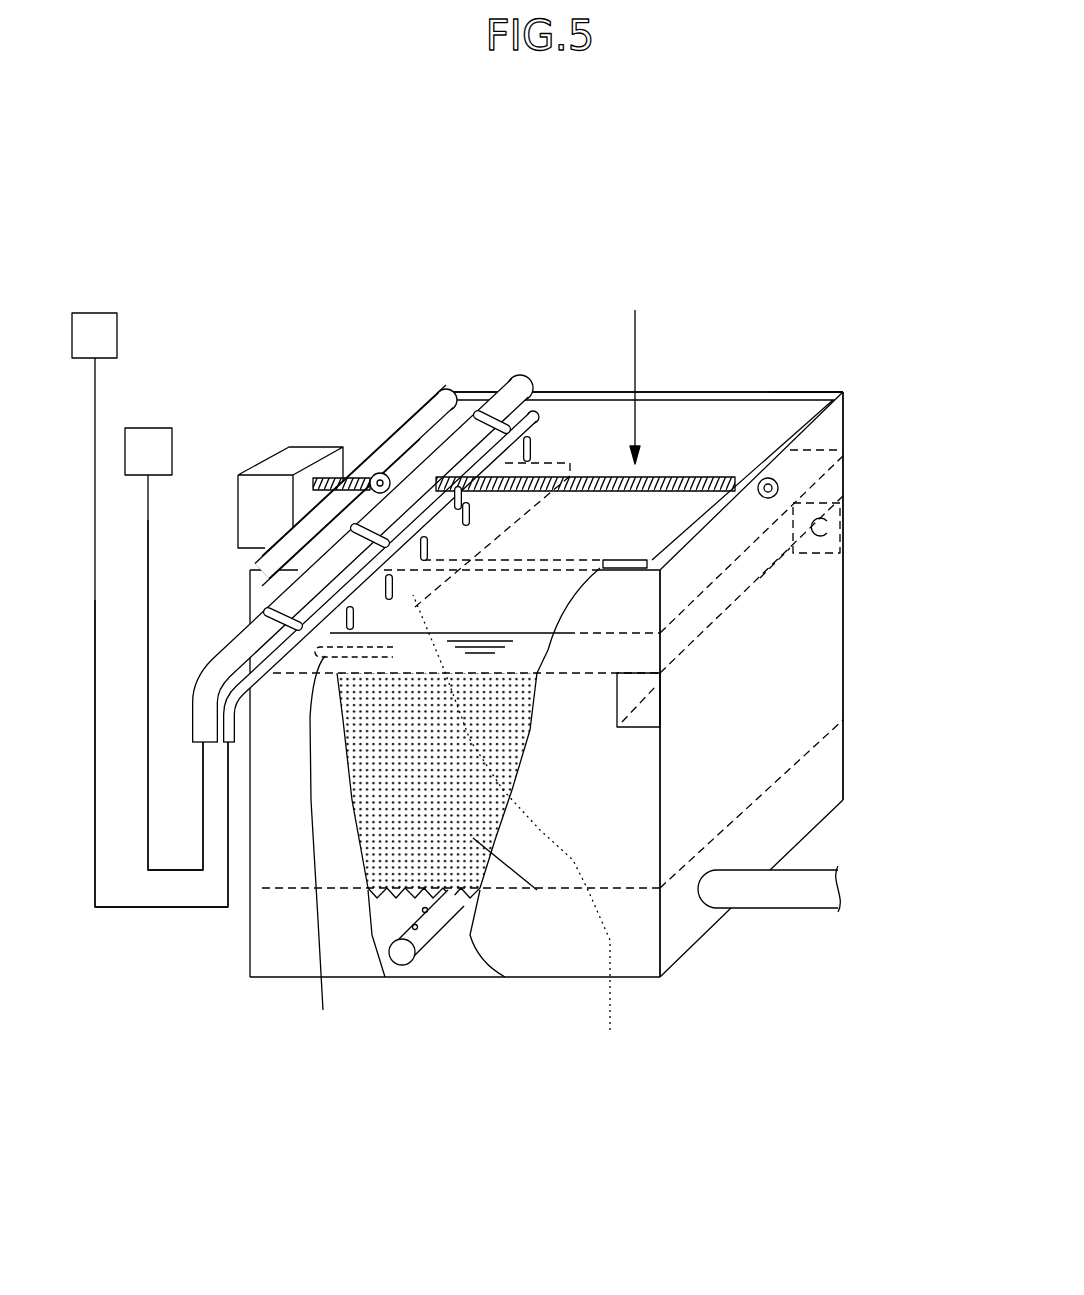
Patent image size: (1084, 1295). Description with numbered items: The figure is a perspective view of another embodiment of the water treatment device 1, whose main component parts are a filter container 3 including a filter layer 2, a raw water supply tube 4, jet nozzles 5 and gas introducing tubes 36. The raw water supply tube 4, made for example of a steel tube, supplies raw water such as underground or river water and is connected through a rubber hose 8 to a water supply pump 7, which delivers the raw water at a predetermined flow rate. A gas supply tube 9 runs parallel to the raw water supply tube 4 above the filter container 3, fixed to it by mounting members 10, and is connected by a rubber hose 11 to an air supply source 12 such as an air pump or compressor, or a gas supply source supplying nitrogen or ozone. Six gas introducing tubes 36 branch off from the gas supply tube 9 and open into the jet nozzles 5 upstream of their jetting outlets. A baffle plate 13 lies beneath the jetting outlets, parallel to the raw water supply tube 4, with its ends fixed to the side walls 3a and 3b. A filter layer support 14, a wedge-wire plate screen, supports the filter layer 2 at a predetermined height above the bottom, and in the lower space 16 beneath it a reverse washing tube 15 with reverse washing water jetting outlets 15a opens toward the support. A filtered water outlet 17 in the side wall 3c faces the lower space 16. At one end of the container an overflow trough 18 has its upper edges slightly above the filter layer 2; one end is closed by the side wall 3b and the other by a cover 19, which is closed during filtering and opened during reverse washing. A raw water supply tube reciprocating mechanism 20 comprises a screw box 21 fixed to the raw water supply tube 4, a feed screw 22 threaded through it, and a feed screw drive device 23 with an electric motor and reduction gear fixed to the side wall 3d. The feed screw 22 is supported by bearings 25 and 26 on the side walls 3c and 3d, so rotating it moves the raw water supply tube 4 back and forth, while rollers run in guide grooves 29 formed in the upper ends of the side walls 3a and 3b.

The water treatment device 1 is at (622, 232).
The filter layer 2 is at (537, 892).
The filter container 3 is at (817, 662).
The side wall 3a is at (690, 420).
The side wall 3b is at (647, 592).
The side wall 3c is at (810, 707).
The side wall 3d is at (448, 440).
The raw water supply tube 4 is at (420, 447).
The jet nozzles 5 is at (280, 592).
The water supply pump 7 is at (148, 428).
The rubber hose 8 is at (148, 520).
The gas supply tube 9 is at (462, 453).
The mounting members 10 is at (500, 388).
The rubber hose 11 is at (165, 907).
The air supply source 12 is at (94, 310).
The baffle plate 13 is at (524, 831).
The filter layer support 14 is at (396, 965).
The reverse washing tube 15 is at (433, 917).
The reverse washing water jetting outlets 15a is at (426, 915).
The lower space 16 is at (495, 955).
The filtered water outlet 17 is at (775, 908).
The overflow trough 18 is at (783, 580).
The cover 19 is at (840, 520).
The raw water supply tube reciprocating mechanism 20 is at (640, 367).
The screw box 21 is at (425, 417).
The feed screw 22 is at (718, 475).
The feed screw drive device 23 is at (310, 448).
The bearing 25 is at (780, 473).
The bearing 26 is at (433, 490).
The guide grooves 29 is at (606, 558).
The gas introducing tubes 36 is at (323, 1010).